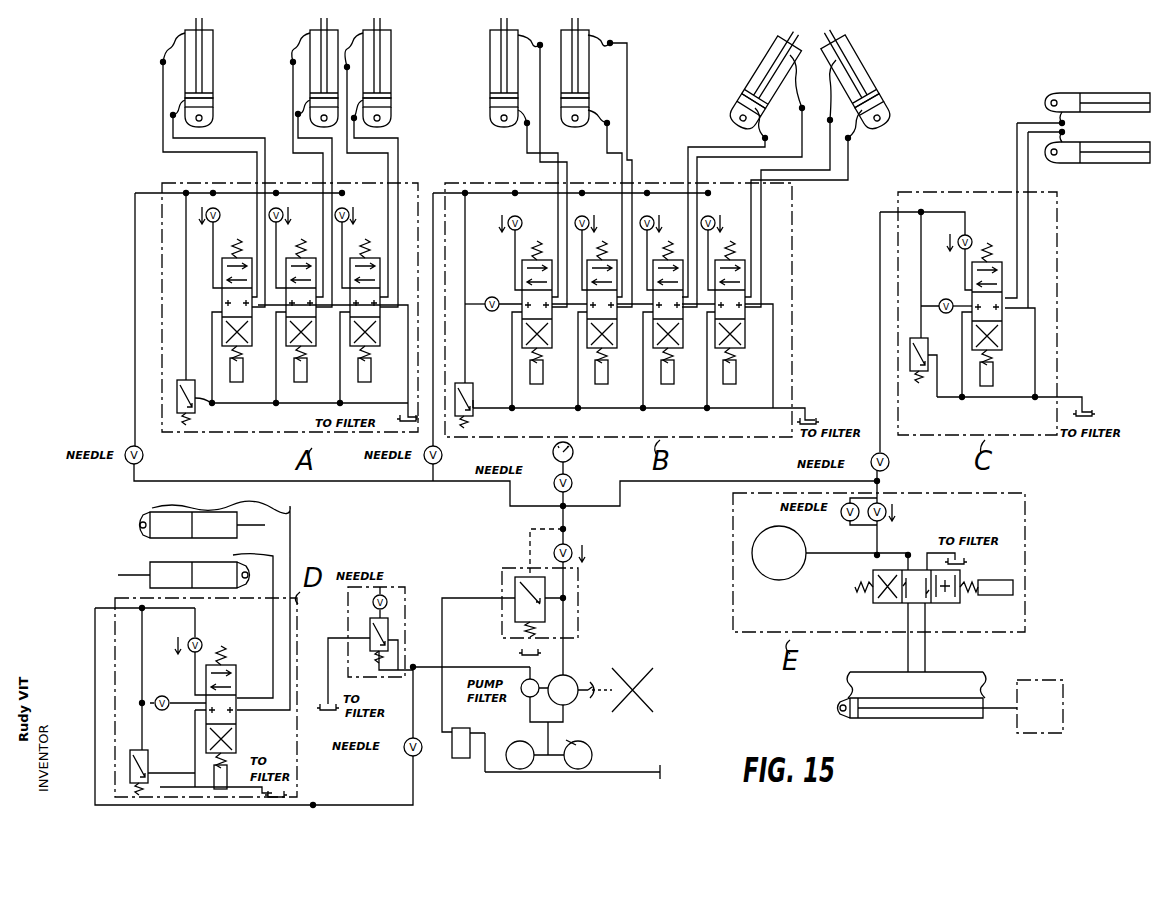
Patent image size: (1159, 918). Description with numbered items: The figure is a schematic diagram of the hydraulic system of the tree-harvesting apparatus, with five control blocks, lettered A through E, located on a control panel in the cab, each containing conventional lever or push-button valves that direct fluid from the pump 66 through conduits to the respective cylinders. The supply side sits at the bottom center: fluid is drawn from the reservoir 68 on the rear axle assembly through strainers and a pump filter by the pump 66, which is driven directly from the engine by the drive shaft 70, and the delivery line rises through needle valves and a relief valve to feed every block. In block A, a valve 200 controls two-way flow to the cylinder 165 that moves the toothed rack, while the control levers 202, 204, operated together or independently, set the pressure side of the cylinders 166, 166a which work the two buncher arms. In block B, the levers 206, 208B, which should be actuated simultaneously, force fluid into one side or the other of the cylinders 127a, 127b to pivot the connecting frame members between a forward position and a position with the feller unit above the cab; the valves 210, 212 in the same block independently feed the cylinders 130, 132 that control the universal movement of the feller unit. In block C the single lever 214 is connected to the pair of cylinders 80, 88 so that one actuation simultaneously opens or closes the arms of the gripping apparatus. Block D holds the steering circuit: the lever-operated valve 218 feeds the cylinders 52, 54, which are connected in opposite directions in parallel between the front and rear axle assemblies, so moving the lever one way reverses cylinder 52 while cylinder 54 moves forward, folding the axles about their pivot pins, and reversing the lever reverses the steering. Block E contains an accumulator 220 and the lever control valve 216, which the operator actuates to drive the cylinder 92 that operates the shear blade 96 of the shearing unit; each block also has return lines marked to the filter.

The cylinder 165 is at (213, 82).
The cylinder 166 is at (307, 83).
The cylinder 166a is at (391, 86).
The cylinder 127a is at (490, 72).
The cylinder 127b is at (590, 68).
The cylinder 130 is at (754, 77).
The cylinder 132 is at (870, 75).
The hydraulic cylinder 80 is at (1113, 92).
The hydraulic cylinder 88 is at (1108, 165).
The control valve 200 is at (243, 375).
The control lever 202 is at (307, 375).
The control lever 204 is at (371, 375).
The lever 206 is at (543, 377).
The lever 208B is at (616, 387).
The valve 210 is at (674, 377).
The valve 212 is at (736, 377).
The lever 214 is at (993, 380).
The cylinder 52 is at (145, 530).
The cylinder 54 is at (150, 569).
The lever-operated valve 218 is at (227, 768).
The pump 66 is at (568, 677).
The drive shaft 70 is at (655, 690).
The reservoir 68 is at (660, 772).
The accumulator 220 is at (781, 580).
The lever control valve 216 is at (1013, 587).
The shear cylinder 92 is at (920, 720).
The shear blade 96 is at (1030, 735).